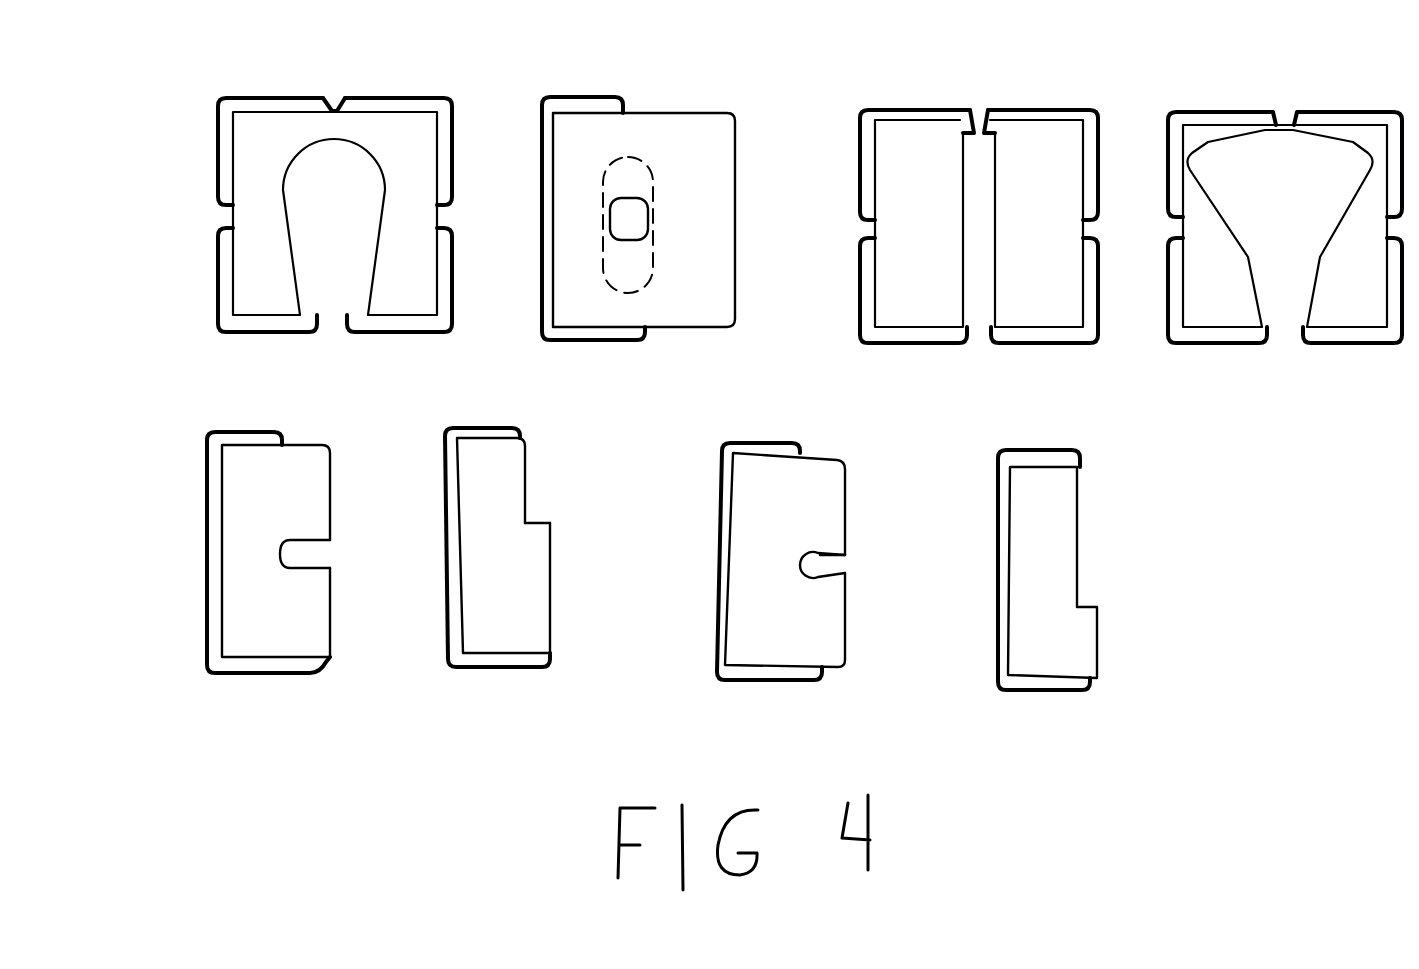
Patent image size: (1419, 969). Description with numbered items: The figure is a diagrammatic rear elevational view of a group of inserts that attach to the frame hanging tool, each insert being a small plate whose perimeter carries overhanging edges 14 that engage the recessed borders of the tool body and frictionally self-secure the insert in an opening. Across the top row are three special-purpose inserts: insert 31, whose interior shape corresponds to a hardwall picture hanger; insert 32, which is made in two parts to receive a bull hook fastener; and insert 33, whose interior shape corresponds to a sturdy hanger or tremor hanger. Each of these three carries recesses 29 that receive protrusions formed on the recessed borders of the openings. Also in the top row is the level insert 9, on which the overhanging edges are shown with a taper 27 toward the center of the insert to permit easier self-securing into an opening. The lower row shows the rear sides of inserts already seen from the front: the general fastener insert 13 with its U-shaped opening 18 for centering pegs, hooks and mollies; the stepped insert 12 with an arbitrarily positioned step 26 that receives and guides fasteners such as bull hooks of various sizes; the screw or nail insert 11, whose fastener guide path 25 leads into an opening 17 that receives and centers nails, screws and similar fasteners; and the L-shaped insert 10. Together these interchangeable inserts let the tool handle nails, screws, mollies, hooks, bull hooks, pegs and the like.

The level insert 9 is at (778, 228).
The L-shaped insert 10 is at (1162, 538).
The screw or nail insert 11 is at (873, 717).
The stepped insert 12 is at (522, 703).
The general fastener insert 13 is at (367, 722).
The overhanging edges 14 is at (622, 365).
The opening 17 is at (805, 553).
The U-shaped opening 18 is at (342, 537).
The fastener guide path 25 is at (890, 553).
The step 26 is at (577, 485).
The taper 27 is at (587, 97).
The recesses 29 is at (335, 110).
The insert 31 is at (258, 142).
The insert 32 is at (922, 145).
The insert 33 is at (1202, 233).